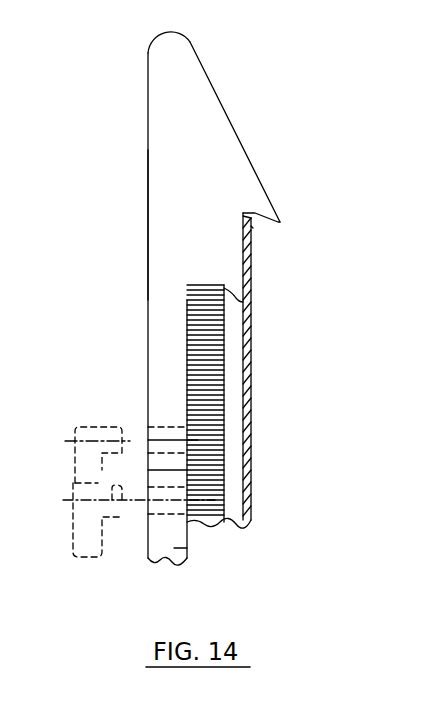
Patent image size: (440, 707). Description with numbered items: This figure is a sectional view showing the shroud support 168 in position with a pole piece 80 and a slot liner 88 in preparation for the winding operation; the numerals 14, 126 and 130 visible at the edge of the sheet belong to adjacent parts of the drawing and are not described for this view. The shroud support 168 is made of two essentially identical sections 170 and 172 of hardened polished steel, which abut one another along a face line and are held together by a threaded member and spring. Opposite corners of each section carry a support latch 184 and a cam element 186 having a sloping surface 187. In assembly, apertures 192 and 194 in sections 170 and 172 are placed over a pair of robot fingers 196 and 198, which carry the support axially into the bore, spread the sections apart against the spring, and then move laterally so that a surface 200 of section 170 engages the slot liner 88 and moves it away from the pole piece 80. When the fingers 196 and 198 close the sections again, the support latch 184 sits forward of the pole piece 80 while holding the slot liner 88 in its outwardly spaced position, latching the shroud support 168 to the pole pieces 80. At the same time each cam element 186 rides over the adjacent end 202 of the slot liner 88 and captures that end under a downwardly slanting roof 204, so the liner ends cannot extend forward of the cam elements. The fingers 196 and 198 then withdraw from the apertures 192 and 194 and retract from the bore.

The display device 14 is at (0, 50).
The mounting element 126 is at (0, 14).
The mounting element 130 is at (0, 98).
The shroud support 168 is at (147, 197).
The section 170 is at (168, 244).
The section 172 is at (187, 548).
The sloping surface 187 is at (218, 90).
The cam element 186 is at (258, 202).
The support latch 184 is at (247, 302).
The slot liner 88 is at (246, 398).
The pole piece 80 is at (212, 448).
The surface 200 is at (250, 284).
The end 202 is at (251, 228).
The downwardly slanting roof 204 is at (272, 223).
The aperture 192 is at (148, 440).
The aperture 194 is at (145, 505).
The robot finger 196 is at (103, 426).
The robot finger 198 is at (110, 484).